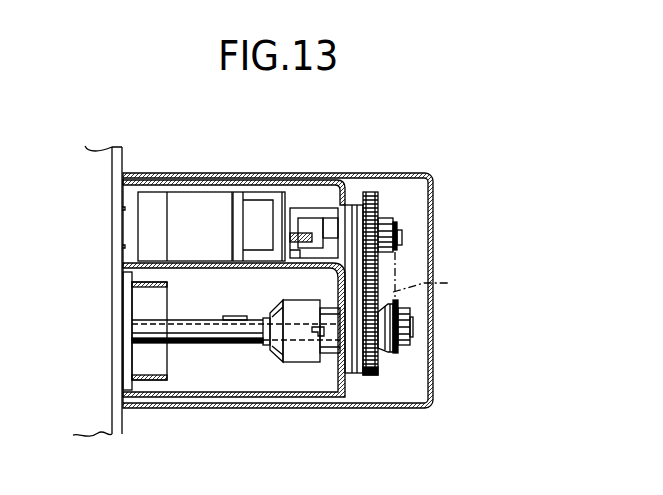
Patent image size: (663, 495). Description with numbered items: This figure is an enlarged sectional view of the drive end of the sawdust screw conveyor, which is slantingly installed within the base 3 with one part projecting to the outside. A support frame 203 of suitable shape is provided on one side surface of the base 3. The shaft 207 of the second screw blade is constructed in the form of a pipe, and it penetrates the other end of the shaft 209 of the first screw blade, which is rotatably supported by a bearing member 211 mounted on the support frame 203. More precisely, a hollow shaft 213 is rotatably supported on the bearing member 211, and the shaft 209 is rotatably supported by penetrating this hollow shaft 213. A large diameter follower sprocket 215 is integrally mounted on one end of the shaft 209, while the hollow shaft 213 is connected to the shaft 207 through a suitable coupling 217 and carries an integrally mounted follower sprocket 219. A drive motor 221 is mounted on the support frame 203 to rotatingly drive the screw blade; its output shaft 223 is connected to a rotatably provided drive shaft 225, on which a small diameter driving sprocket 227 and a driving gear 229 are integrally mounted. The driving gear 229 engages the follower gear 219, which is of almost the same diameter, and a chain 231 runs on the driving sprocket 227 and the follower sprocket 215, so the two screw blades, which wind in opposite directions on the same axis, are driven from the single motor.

The base 3 is at (120, 422).
The support frame 203 is at (283, 403).
The shaft of the second screw blade 207 is at (223, 345).
The shaft of the first screw blade 209 is at (410, 325).
The bearing member 211 is at (358, 373).
The hollow shaft 213 is at (339, 362).
The large diameter follower sprocket 215 is at (398, 353).
The coupling 217 is at (290, 313).
The follower sprocket 219 is at (375, 376).
The drive motor 221 is at (217, 240).
The output shaft 223 is at (305, 248).
The drive shaft 225 is at (346, 205).
The small diameter driving sprocket 227 is at (402, 220).
The driving gear 229 is at (378, 190).
The chain 231 is at (440, 276).